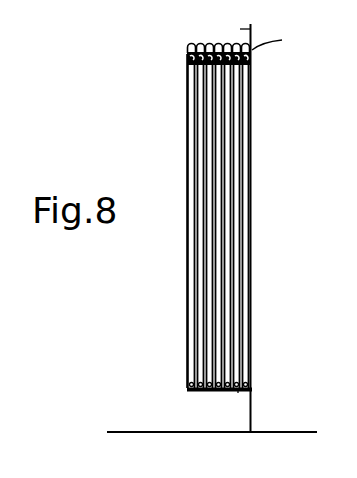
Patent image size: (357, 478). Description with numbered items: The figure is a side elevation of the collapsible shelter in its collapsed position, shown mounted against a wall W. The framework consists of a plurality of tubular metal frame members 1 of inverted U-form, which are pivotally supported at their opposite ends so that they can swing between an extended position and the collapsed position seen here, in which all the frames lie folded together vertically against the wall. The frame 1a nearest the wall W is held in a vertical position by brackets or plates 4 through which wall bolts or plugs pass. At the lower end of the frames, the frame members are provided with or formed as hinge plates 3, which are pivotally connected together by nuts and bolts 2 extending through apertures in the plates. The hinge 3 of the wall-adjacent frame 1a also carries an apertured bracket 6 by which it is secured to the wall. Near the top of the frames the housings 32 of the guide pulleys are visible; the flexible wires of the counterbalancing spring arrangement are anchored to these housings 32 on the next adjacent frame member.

The tubular metal frame members 1 is at (200, 146).
The frame nearest the wall 1a is at (252, 103).
The nuts and bolts 2 is at (247, 393).
The hinge plates 3 is at (225, 394).
The brackets or plates 4 is at (282, 40).
The apertured bracket 6 is at (253, 388).
The pulley housing 32 is at (195, 71).
The wall W is at (265, 29).